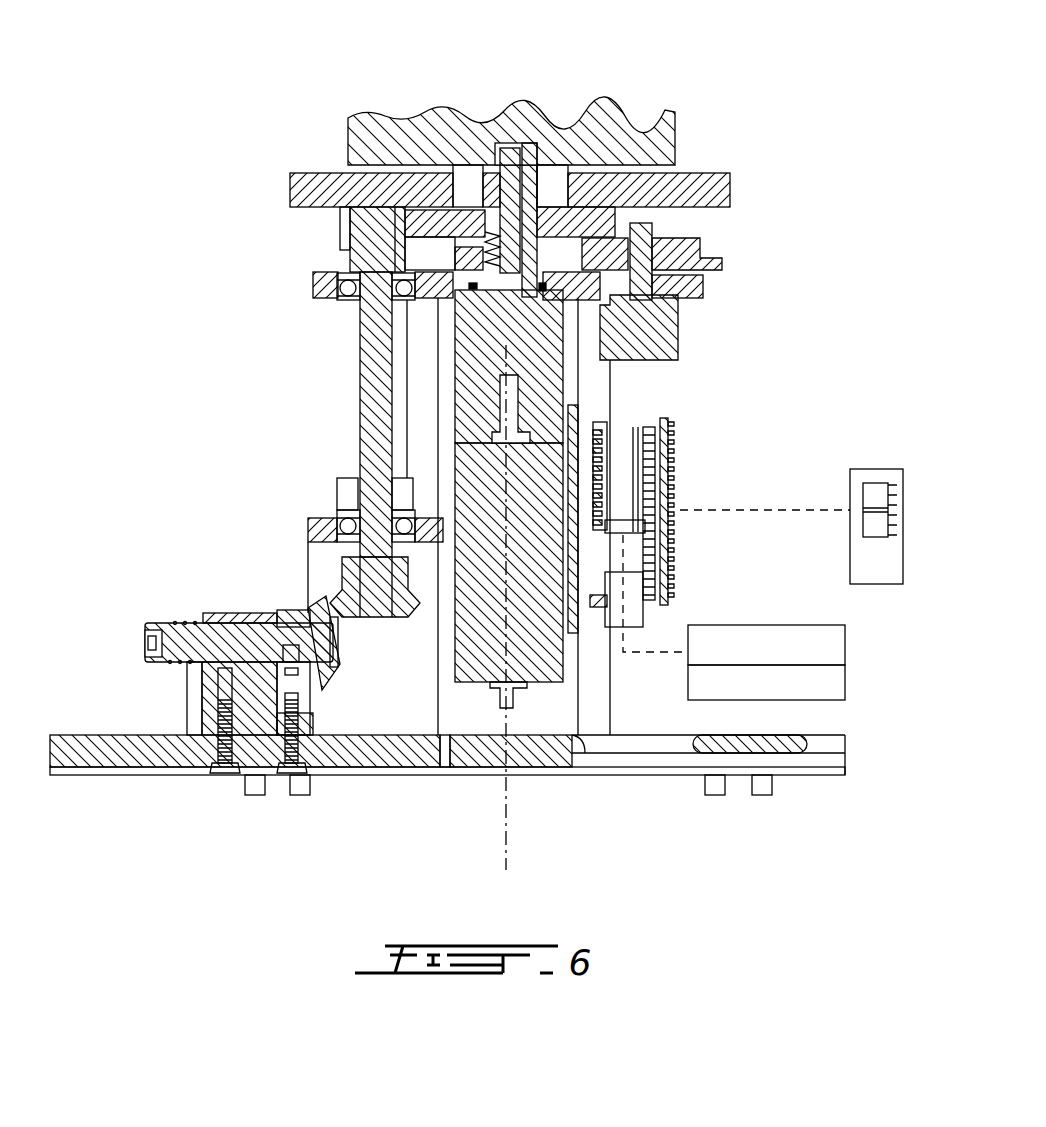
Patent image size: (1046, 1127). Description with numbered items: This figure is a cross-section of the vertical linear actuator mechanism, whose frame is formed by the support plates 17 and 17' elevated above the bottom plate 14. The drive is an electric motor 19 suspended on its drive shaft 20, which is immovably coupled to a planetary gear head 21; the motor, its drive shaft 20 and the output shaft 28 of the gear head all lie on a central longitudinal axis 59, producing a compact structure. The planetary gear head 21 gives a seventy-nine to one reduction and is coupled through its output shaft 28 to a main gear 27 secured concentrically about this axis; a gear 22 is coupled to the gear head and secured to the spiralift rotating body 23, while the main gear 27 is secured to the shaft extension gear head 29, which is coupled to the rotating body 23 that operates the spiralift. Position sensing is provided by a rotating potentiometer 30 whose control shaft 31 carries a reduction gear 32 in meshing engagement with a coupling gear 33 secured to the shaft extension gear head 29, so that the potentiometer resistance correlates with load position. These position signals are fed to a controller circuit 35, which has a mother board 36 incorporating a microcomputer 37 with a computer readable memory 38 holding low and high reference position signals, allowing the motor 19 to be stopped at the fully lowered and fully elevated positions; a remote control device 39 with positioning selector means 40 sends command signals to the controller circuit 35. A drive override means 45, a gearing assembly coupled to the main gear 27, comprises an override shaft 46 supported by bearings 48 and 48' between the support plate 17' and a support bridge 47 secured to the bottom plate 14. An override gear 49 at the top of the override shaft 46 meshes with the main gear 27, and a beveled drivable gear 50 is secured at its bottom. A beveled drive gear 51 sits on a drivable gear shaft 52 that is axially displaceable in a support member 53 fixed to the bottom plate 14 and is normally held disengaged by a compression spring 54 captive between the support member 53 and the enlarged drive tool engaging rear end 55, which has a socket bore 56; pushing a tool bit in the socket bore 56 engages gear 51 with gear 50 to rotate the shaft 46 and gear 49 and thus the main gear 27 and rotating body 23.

The bottom plate 14 is at (122, 745).
The support plate 17 is at (525, 152).
The support plate 17' is at (517, 279).
The electric motor 19 is at (545, 655).
The drive shaft 20 is at (508, 405).
The planetary gear head 21 is at (560, 335).
The gear 22 is at (554, 212).
The spiralift rotating body 23 is at (350, 137).
The main gear 27 is at (604, 224).
The output shaft 28 is at (503, 150).
The shaft extension gear head 29 is at (527, 200).
The position control rotating potentiometer 30 is at (656, 315).
The control shaft 31 is at (648, 228).
The reduction gear 32 is at (692, 252).
The coupling gear 33 is at (460, 260).
The controller circuit 35 is at (674, 494).
The mother board 36 is at (607, 521).
The microcomputer 37 is at (845, 636).
The computer readable memory 38 is at (835, 682).
The remote control device 39 is at (851, 562).
The positioning selector means 40 is at (876, 494).
The drive override means 45 is at (257, 604).
The override shaft 46 is at (372, 425).
The support bridge 47 is at (322, 566).
The bearing 48 is at (356, 317).
The bearing 48' is at (329, 493).
The override gear 49 is at (343, 230).
The beveled drivable gear 50 is at (416, 616).
The beveled drive gear 51 is at (338, 672).
The drivable gear shaft 52 is at (250, 645).
The support member 53 is at (232, 615).
The compression spring 54 is at (185, 623).
The drive tool engaging rear end 55 is at (167, 664).
The socket bore 56 is at (152, 643).
The central longitudinal axis 59 is at (506, 808).